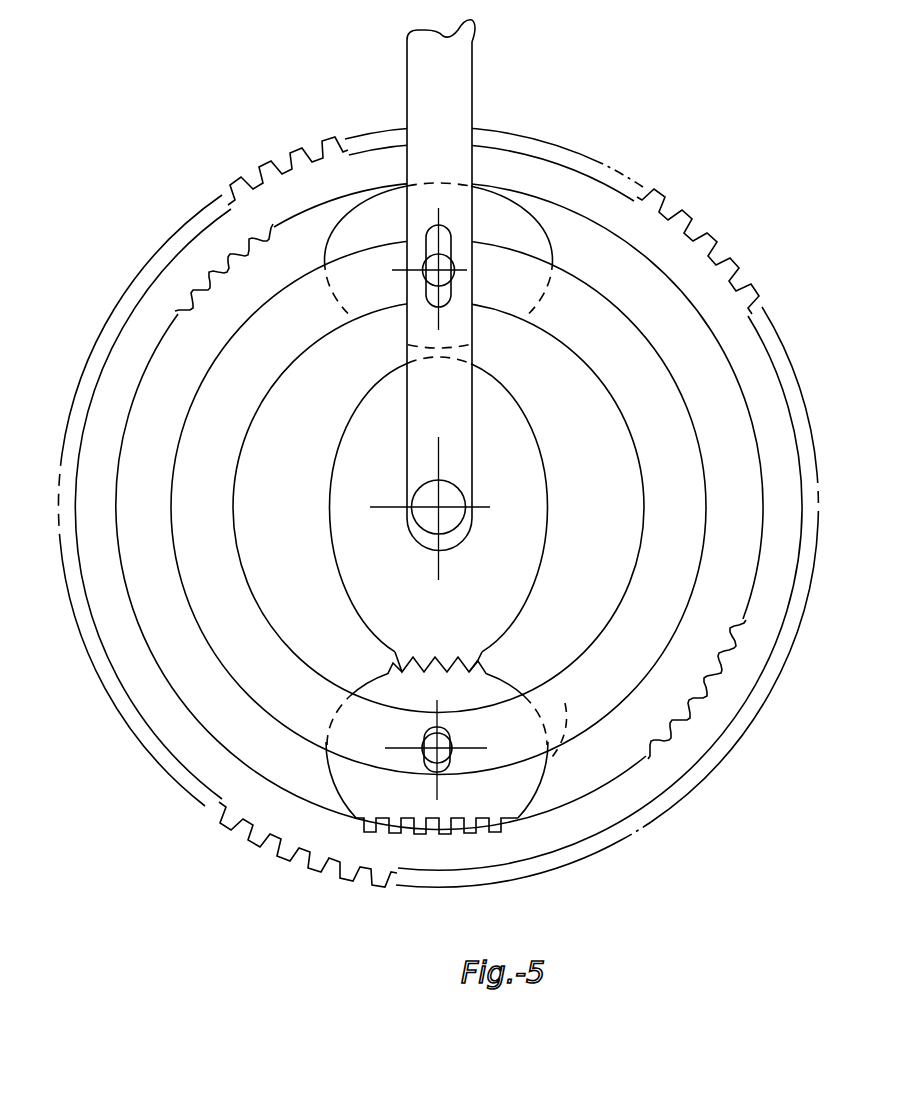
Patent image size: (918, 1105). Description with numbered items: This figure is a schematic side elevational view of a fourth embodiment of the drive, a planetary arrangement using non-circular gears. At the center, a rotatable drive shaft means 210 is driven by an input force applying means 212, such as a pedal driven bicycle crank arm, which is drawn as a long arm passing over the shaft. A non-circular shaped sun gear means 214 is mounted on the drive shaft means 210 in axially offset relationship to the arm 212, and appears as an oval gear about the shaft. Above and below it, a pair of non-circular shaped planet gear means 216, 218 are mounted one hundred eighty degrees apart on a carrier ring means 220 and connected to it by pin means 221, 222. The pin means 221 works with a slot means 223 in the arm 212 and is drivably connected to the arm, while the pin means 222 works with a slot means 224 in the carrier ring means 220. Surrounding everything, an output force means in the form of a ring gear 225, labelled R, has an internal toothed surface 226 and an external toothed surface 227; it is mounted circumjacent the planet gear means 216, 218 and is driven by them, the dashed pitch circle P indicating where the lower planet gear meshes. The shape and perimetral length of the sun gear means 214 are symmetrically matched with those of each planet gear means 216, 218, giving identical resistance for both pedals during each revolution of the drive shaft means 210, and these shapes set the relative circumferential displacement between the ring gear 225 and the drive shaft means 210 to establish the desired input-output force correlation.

The ring gear R is at (737, 377).
The pitch circle of planet pinion P is at (557, 725).
The rotatable drive shaft means 210 is at (440, 505).
The input force applying means 212 is at (452, 97).
The non-circular shaped sun gear means 214 is at (527, 594).
The non-circular shaped planet gear means 216 is at (502, 210).
The non-circular shaped planet gear means 218 is at (491, 802).
The carrier ring means 220 is at (615, 698).
The pin means 221 is at (447, 262).
The pin means 222 is at (443, 743).
The slot means 223 is at (447, 276).
The slot means 224 is at (420, 765).
The ring gear 225 is at (220, 228).
The internal toothed surface 226 is at (177, 317).
The external toothed surface 227 is at (275, 172).